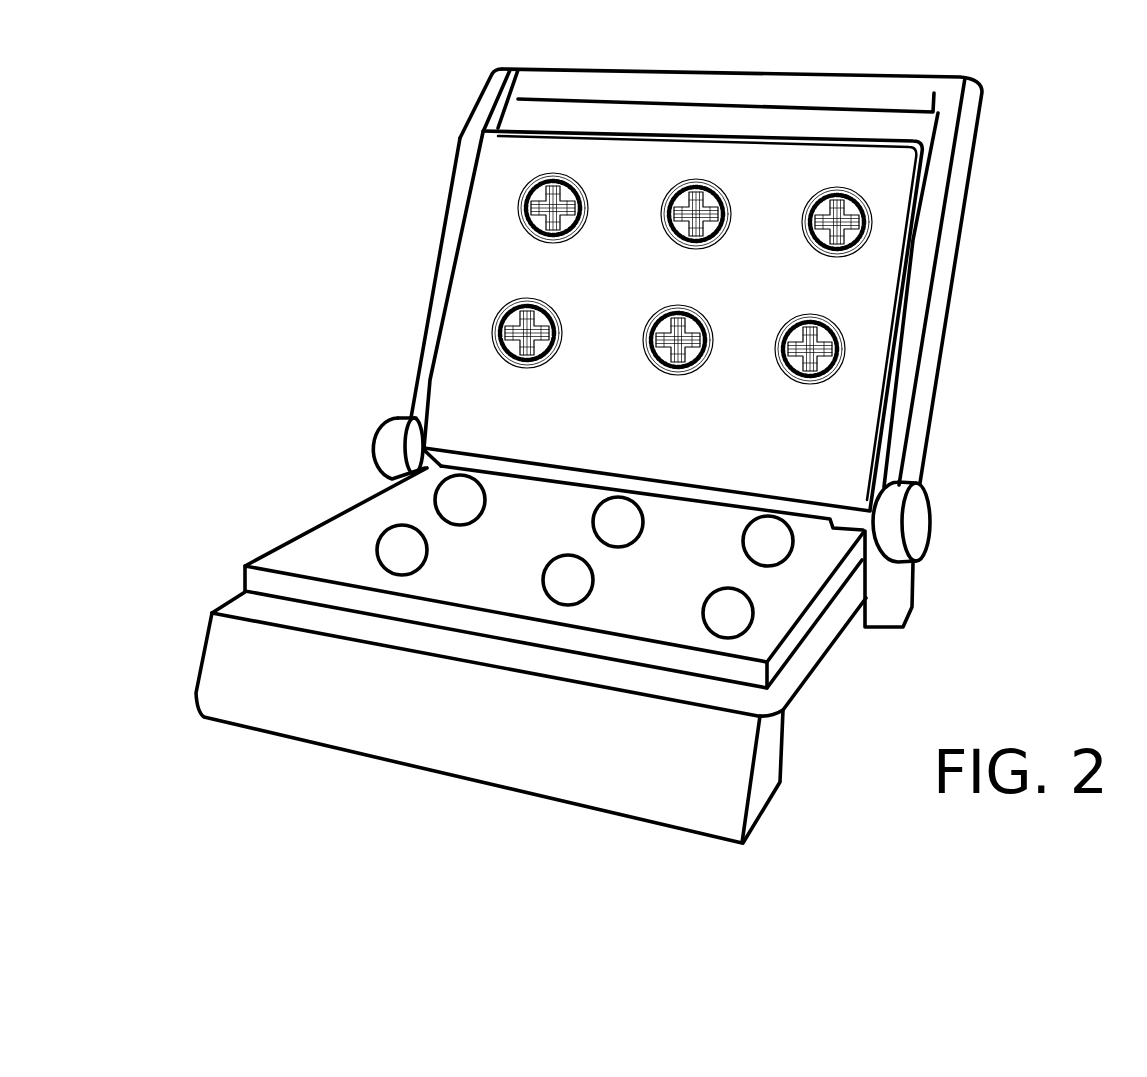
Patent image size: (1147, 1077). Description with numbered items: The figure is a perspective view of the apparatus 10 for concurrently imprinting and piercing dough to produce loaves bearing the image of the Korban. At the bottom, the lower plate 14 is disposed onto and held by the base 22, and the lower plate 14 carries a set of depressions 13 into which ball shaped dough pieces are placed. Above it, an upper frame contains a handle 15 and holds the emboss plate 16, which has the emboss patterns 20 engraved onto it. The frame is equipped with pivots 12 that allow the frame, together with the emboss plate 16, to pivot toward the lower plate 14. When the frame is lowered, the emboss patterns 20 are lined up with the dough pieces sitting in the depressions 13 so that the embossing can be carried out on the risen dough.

The apparatus 10 is at (300, 268).
The pivots 12 is at (390, 447).
The depressions 13 is at (730, 613).
The lower plate 14 is at (563, 568).
The handle 15 is at (548, 88).
The emboss plate 16 is at (855, 290).
The emboss pattern 20 is at (838, 354).
The base 22 is at (490, 738).